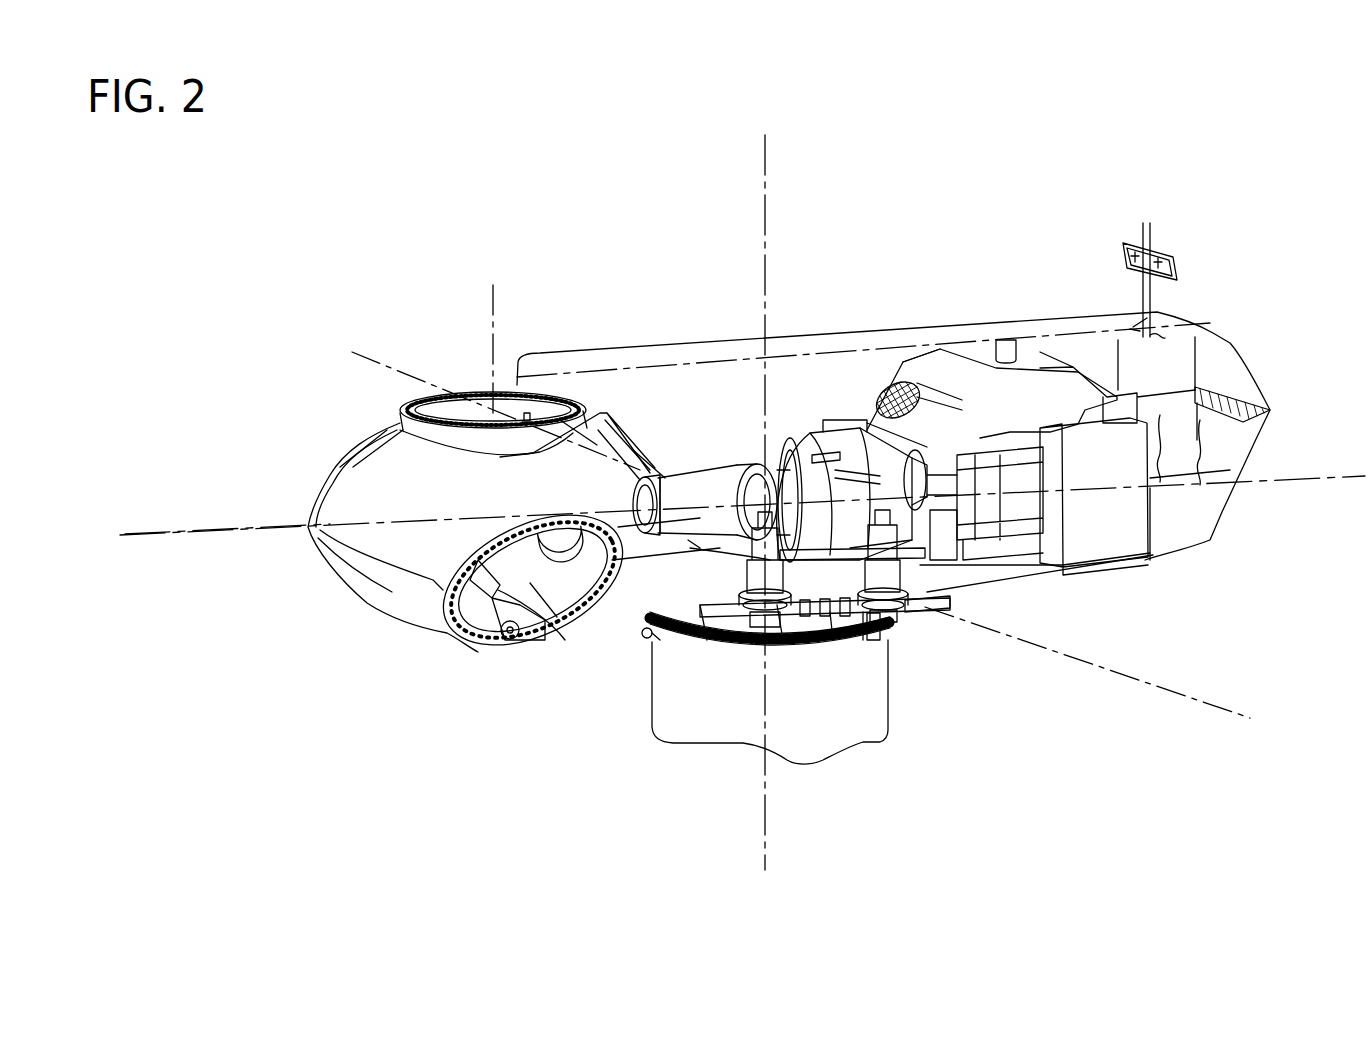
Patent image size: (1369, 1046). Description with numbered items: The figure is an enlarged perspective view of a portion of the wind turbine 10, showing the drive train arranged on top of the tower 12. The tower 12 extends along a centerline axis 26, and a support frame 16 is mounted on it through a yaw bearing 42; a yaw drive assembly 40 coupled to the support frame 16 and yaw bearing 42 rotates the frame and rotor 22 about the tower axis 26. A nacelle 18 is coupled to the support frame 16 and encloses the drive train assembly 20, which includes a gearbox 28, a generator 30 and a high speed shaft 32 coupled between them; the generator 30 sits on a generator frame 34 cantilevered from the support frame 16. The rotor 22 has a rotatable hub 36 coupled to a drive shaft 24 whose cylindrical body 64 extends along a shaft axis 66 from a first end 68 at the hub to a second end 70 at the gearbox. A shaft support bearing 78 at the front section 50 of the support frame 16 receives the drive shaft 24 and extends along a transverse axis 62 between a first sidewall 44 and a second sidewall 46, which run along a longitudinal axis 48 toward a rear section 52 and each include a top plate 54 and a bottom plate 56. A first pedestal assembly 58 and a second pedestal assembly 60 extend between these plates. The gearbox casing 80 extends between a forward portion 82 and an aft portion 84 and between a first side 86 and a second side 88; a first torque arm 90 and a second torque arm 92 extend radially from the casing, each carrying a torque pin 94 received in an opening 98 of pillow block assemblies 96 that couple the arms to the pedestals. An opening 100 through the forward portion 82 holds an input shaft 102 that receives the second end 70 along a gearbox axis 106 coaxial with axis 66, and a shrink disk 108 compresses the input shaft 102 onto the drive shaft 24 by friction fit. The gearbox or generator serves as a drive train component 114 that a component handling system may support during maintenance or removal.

The wind turbine 10 is at (1116, 188).
The tower 12 is at (890, 690).
The support frame 16 is at (650, 633).
The nacelle 18 is at (1018, 322).
The drive train assembly 20 is at (912, 345).
The rotor 22 is at (322, 391).
The drive shaft 24 is at (673, 440).
The centerline axis 26 is at (770, 165).
The gearbox 28 is at (828, 448).
The generator 30 is at (906, 380).
The high speed shaft 32 is at (940, 473).
The generator frame 34 is at (1107, 580).
The hub 36 is at (370, 600).
The yaw drive assembly 40 is at (920, 617).
The yaw bearing 42 is at (735, 645).
The first sidewall 44 is at (593, 623).
The second sidewall 46 is at (613, 425).
The longitudinal axis 48 is at (185, 534).
The front section 50 is at (543, 643).
The rear section 52 is at (940, 600).
The top plate 54 is at (868, 622).
The bottom plate 56 is at (863, 617).
The first pedestal assembly 58 is at (830, 617).
The second pedestal assembly 60 is at (719, 443).
The transverse axis 62 is at (386, 344).
The cylindrical body 64 is at (673, 440).
The centerline axis 66 is at (291, 526).
The first end 68 is at (631, 438).
The second end 70 is at (702, 452).
The shaft support bearing 78 is at (640, 500).
The gearbox casing 80 is at (865, 420).
The forward portion 82 is at (802, 428).
The aft portion 84 is at (905, 443).
The first side 86 is at (892, 462).
The second side 88 is at (786, 406).
The second torque arm 92 is at (786, 412).
The first torque arm 90 is at (896, 542).
The torque pin 94 is at (707, 605).
The pillow block assemblies 96 is at (777, 605).
The opening 98 is at (738, 548).
The opening 100 is at (690, 548).
The input shaft 102 is at (642, 633).
The centerline axis 106 is at (148, 534).
The shrink disk 108 is at (742, 458).
The drive train component 114 is at (830, 430).